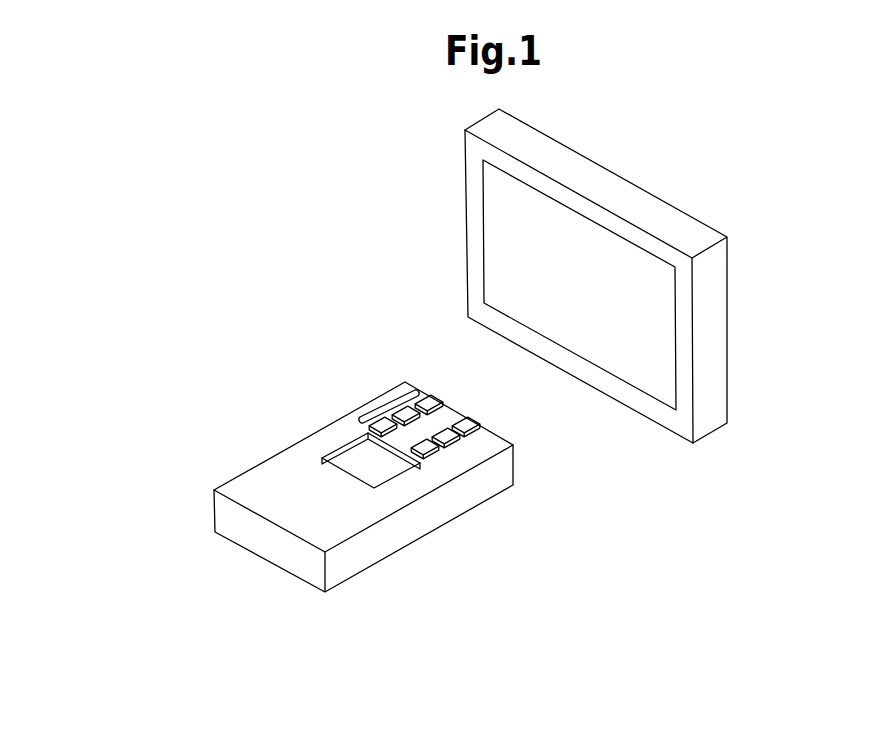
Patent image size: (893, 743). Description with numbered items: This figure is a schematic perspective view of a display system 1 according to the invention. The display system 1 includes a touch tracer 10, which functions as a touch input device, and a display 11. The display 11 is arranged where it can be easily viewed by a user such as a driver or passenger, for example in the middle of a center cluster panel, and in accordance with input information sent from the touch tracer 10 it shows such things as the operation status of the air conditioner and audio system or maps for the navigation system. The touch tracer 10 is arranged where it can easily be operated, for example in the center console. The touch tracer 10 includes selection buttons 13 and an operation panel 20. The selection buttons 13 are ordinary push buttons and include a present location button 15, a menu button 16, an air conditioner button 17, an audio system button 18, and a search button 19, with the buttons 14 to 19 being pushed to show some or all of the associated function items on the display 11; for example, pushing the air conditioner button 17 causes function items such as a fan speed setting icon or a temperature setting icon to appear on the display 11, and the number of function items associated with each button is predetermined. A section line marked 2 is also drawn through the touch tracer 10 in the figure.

The display system 1 is at (367, 278).
The section line II-II 2 is at (270, 538).
The touch tracer 10 is at (262, 463).
The display 11 is at (627, 181).
The selection buttons 13 is at (387, 403).
The selection button 14 is at (443, 400).
The present location button 15 is at (478, 432).
The menu button 16 is at (416, 404).
The air conditioner button 17 is at (447, 446).
The audio system button 18 is at (369, 427).
The search button 19 is at (440, 455).
The operation panel 20 is at (355, 473).